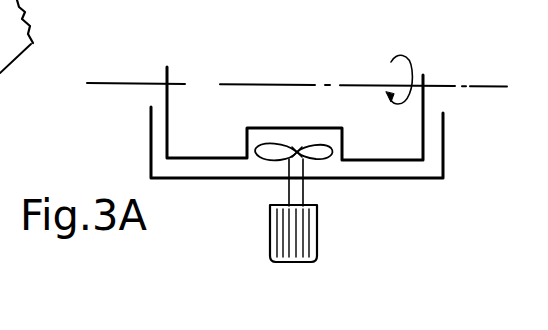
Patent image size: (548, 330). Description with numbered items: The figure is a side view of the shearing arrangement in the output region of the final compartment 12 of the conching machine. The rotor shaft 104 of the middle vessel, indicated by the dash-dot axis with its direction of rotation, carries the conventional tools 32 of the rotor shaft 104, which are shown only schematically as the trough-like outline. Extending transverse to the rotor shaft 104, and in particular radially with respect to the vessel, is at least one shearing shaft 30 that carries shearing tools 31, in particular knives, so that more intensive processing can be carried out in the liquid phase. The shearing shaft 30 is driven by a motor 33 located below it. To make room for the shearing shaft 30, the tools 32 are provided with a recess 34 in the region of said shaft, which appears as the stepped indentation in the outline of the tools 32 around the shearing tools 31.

The final compartment 12 is at (12, 50).
The rotor shaft 104 is at (114, 75).
The shearing shaft 30 is at (305, 185).
The shearing tools 31 is at (328, 140).
The tools of the rotor shaft 32 is at (201, 155).
The motor 33 is at (268, 240).
The recess 34 is at (270, 138).